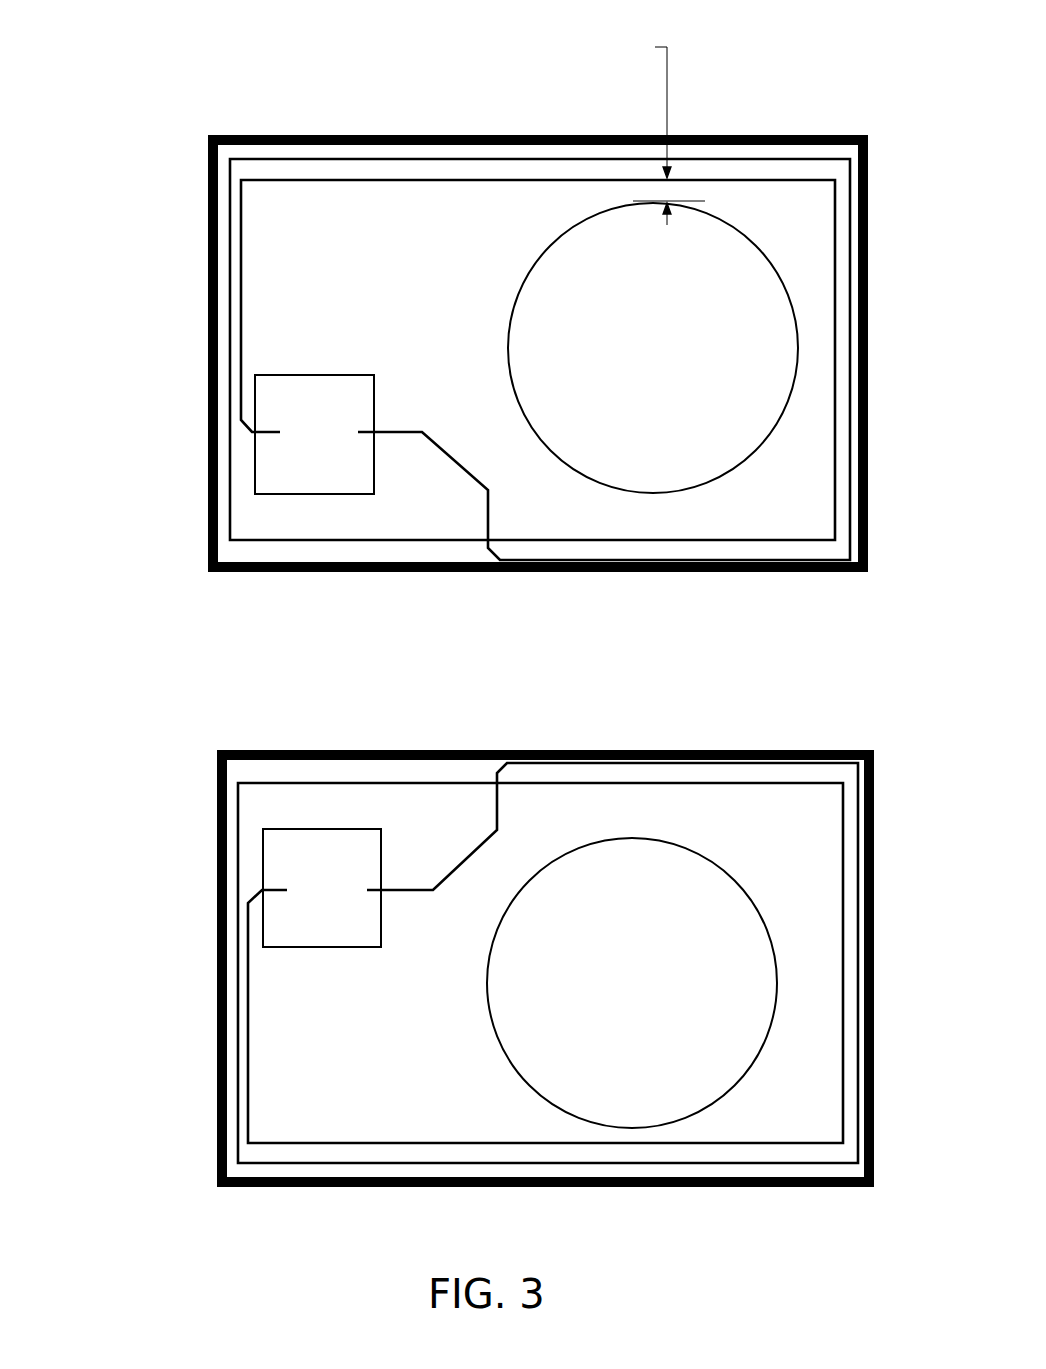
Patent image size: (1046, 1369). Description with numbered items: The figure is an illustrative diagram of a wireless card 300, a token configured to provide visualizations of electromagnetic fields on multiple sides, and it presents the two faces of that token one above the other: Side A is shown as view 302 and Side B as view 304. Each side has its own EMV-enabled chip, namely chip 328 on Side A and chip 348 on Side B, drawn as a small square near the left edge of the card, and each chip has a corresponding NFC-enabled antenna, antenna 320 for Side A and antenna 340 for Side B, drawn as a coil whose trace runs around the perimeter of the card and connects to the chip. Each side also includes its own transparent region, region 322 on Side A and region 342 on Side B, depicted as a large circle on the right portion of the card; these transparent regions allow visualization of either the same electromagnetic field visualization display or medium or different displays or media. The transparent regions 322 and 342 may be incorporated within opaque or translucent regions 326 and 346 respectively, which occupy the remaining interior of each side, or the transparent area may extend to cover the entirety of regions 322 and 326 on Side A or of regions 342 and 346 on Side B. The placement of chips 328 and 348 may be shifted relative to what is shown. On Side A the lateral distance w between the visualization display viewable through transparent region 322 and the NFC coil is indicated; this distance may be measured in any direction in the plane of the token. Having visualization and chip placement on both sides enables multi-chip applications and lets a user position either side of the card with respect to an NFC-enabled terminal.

The wireless card 300 is at (160, 65).
The Side A view 302 is at (488, 353).
The Side B view 304 is at (498, 968).
The NFC-enabled antenna 320 is at (729, 548).
The transparent region 322 is at (648, 282).
The opaque or translucent region 326 is at (441, 322).
The EMV-enabled chip 328 is at (316, 435).
The NFC-enabled antenna 340 is at (326, 1155).
The transparent region 342 is at (625, 905).
The opaque or translucent region 346 is at (393, 1062).
The EMV-enabled chip 348 is at (338, 893).